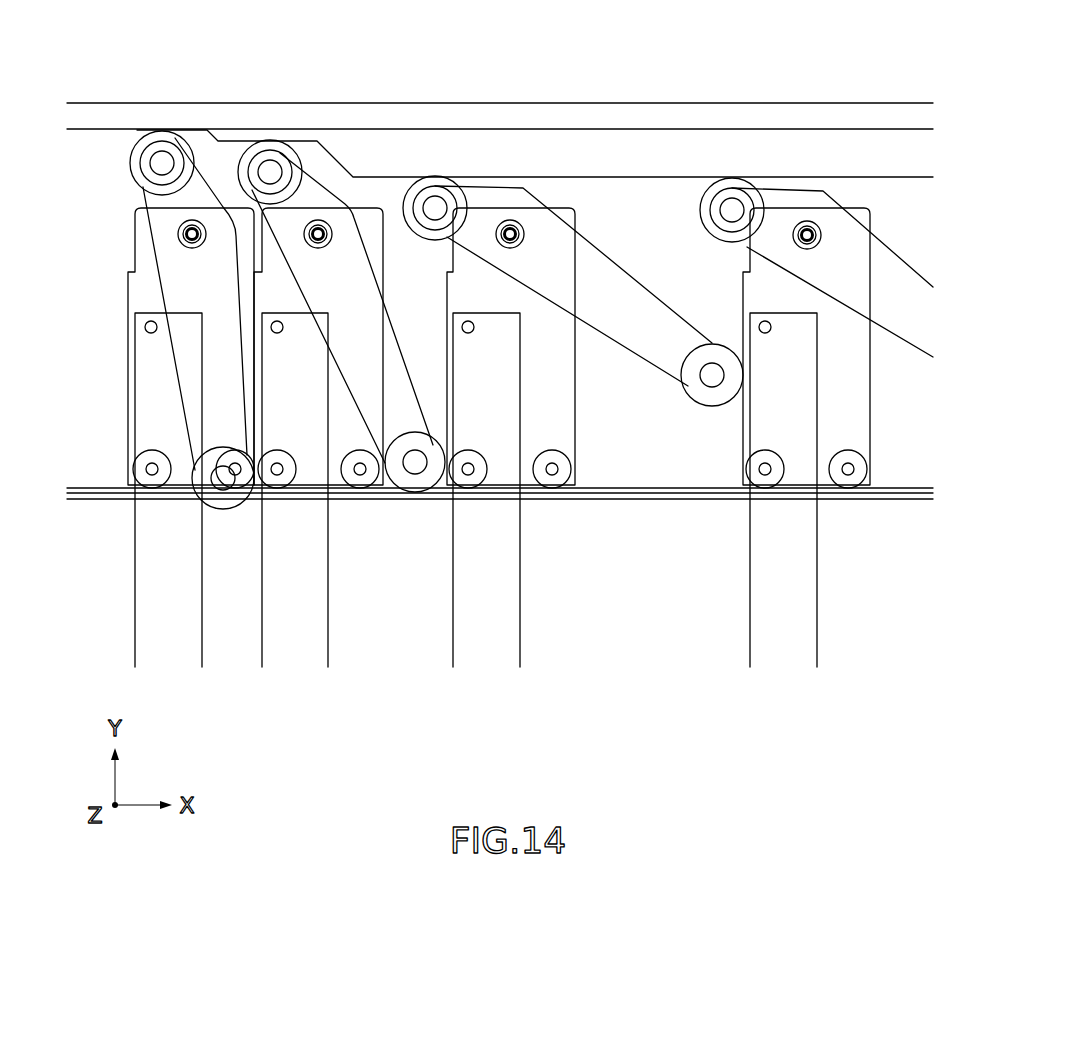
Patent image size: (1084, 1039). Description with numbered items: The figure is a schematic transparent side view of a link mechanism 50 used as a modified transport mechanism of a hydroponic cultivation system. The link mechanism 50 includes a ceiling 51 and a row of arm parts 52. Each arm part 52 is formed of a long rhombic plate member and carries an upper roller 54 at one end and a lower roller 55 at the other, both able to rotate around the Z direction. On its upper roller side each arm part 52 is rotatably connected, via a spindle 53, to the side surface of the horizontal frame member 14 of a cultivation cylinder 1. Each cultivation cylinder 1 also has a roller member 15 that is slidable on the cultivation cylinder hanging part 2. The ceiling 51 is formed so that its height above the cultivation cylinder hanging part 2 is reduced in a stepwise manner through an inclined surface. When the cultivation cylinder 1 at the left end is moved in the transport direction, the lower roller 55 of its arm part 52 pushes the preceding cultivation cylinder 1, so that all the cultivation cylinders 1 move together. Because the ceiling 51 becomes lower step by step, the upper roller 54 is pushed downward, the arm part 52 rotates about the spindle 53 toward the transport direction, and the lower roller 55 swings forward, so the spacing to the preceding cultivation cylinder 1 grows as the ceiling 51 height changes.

The cultivation cylinder 1 is at (318, 603).
The cultivation cylinder hanging part 2 is at (645, 500).
The horizontal frame member 14 is at (135, 230).
The roller member 15 is at (138, 456).
The link mechanism 50 is at (580, 94).
The ceiling 51 is at (92, 140).
The arm part 52 is at (203, 175).
The spindle 53 is at (180, 240).
The upper roller 54 is at (164, 131).
The lower roller 55 is at (228, 509).